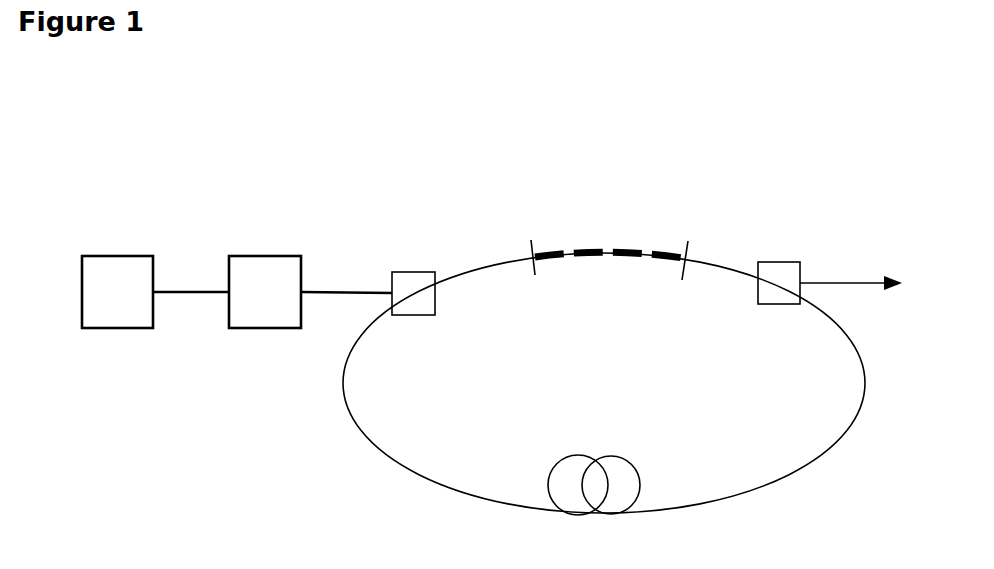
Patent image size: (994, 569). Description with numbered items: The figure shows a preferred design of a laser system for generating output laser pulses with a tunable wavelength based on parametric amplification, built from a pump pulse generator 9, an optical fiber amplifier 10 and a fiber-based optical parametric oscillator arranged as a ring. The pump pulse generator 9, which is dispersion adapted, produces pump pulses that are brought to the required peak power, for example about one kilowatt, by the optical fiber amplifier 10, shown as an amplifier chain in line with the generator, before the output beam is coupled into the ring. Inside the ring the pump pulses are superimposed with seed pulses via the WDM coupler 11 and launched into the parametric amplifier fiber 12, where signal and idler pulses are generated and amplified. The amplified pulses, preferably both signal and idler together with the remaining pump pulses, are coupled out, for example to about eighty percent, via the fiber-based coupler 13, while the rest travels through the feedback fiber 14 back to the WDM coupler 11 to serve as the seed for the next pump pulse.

The pump pulse generator 9 is at (102, 248).
The optical fiber amplifier 10 is at (268, 252).
The WDM coupler 11 is at (417, 258).
The parametric amplifier fiber 12 is at (600, 238).
The fiber-based coupler 13 is at (780, 250).
The feedback fiber 14 is at (628, 452).